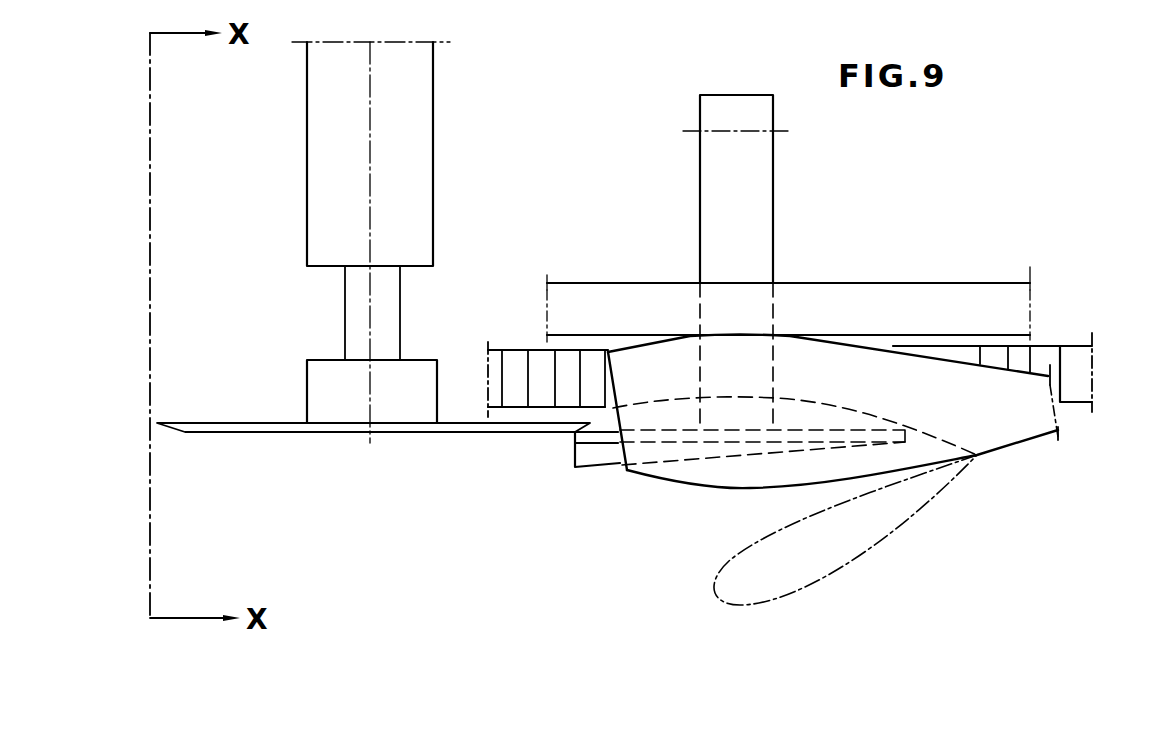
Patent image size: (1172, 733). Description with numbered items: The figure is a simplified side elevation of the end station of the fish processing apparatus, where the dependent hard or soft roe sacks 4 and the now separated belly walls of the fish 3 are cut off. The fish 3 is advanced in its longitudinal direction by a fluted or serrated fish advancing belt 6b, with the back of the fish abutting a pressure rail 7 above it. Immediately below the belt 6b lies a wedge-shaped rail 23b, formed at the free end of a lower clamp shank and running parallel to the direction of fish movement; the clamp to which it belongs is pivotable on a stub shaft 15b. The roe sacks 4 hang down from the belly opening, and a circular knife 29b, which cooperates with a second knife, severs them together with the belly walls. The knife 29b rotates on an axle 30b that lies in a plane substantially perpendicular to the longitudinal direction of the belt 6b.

The fish 3 is at (1018, 436).
The roe sacks 4 is at (872, 545).
The fish advancing belt 6b is at (1062, 358).
The pressure rail 7 is at (907, 290).
The stub shaft 15b is at (690, 132).
The rail 23b is at (572, 462).
The circular knife 29b is at (252, 428).
The axle 30b is at (373, 41).